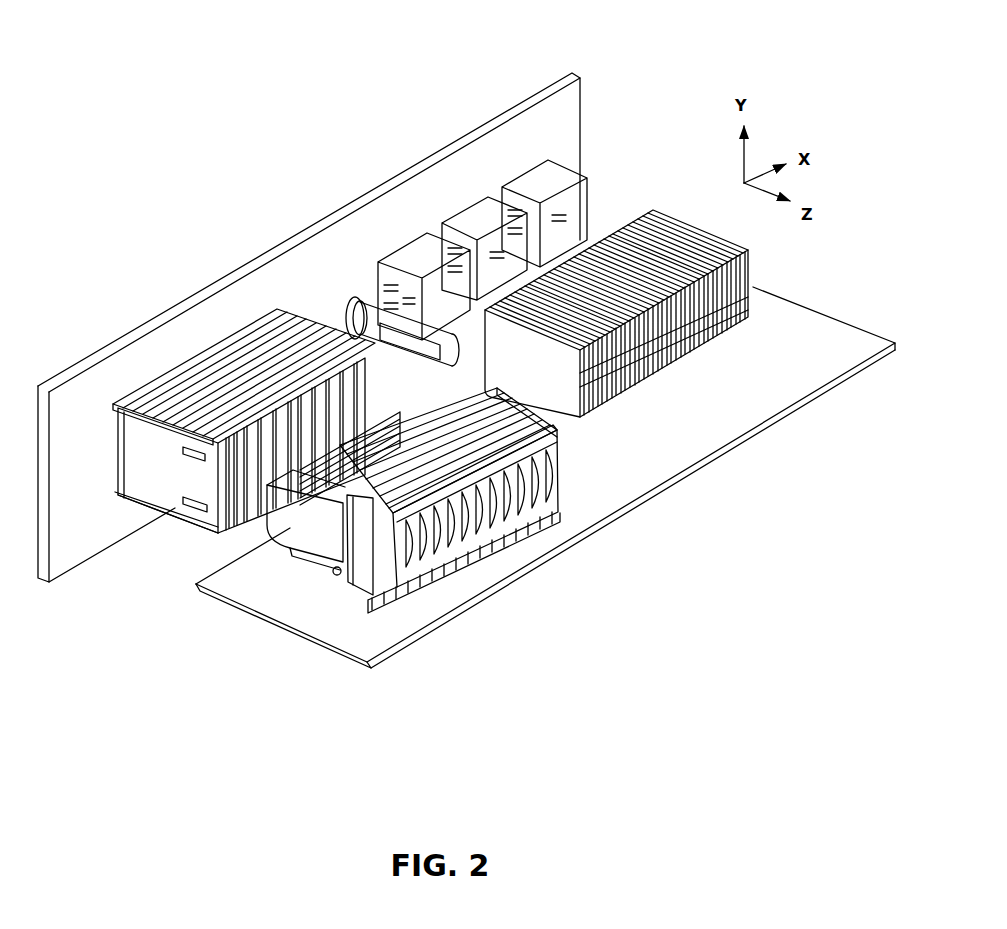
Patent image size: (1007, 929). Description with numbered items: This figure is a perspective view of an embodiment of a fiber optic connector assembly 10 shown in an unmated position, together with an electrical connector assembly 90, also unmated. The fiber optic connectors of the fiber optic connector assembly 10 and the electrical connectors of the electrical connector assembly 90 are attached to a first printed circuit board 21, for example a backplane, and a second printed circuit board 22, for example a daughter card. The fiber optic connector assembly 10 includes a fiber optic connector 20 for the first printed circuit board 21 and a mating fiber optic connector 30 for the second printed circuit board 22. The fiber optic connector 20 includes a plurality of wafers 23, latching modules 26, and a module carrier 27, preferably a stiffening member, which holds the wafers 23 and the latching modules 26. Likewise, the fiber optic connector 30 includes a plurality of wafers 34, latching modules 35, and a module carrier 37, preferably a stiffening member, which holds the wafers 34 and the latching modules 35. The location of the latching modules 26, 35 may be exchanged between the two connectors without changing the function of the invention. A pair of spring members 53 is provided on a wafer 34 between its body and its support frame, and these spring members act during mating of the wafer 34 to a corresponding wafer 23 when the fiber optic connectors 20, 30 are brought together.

The fiber optic connector assembly 10 is at (216, 200).
The fiber optic connector 20 is at (260, 288).
The first printed circuit board 21 is at (565, 110).
The second printed circuit board 22 is at (768, 362).
The wafers 23 is at (192, 395).
The latching modules 26 is at (168, 415).
The module carrier 27 is at (233, 350).
The fiber optic connector 30 is at (499, 597).
The wafers 34 is at (515, 452).
The latching modules 35 is at (308, 527).
The module carrier 37 is at (562, 510).
The spring members 53 is at (382, 495).
The electrical connector assembly 90 is at (523, 63).